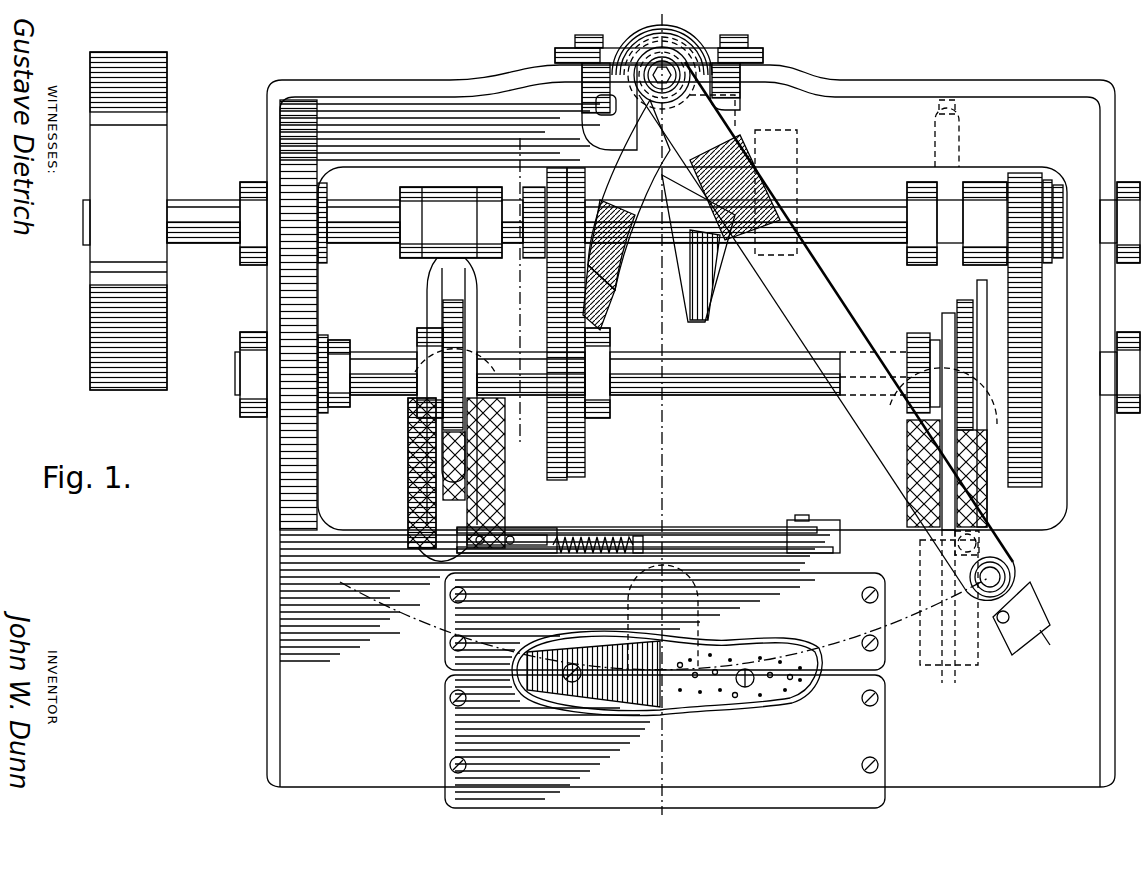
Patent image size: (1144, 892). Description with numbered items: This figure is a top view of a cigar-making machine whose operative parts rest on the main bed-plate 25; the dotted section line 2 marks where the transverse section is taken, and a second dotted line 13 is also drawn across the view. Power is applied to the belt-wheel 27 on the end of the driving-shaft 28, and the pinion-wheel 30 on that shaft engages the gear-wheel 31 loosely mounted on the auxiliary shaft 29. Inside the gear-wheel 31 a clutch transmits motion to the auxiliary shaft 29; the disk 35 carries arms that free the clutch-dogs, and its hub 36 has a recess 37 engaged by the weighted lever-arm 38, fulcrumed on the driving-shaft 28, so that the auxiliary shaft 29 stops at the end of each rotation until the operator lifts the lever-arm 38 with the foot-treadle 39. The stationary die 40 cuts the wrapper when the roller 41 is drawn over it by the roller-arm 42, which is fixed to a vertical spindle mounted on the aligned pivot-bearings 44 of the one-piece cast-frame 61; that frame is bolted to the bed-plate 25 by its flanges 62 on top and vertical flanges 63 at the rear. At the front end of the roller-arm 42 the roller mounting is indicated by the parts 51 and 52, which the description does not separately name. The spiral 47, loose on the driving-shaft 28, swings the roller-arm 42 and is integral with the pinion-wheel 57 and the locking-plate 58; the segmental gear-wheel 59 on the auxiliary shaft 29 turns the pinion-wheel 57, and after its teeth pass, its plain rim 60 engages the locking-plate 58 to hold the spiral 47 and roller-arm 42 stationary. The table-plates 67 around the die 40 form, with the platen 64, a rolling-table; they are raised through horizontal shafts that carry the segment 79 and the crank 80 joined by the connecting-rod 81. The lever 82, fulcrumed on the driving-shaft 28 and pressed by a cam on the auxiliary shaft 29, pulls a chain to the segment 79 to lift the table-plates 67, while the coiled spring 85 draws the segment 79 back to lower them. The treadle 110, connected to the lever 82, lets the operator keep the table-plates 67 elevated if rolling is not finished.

The section line 2 2 is at (662, 416).
The section line 13- 13 is at (520, 289).
The main bed-plate 25 is at (691, 426).
The belt-wheel 27 is at (125, 221).
The driving-shaft 28 is at (830, 200).
The auxiliary shaft 29 is at (731, 396).
The pinion-wheel 30 is at (1022, 174).
The gear-wheel 31 is at (1042, 330).
The disk 35 is at (975, 331).
The hub 36 is at (915, 352).
The recess 37 is at (905, 370).
The weighted lever-arm 38 is at (945, 332).
The foot-treadle 39 is at (990, 507).
The die 40 is at (770, 697).
The roller 41 is at (1000, 546).
The roller-arm 42 is at (827, 331).
The pivot-bearings 44 is at (696, 44).
The rotatory spiral 47 is at (703, 310).
The pivot pin 51 is at (1010, 577).
The clamp block 52 is at (1040, 598).
The pinion-wheel 57 is at (578, 213).
The locking-plate 58 is at (540, 190).
The segmental gear-wheel 59 is at (587, 441).
The plain rim 60 is at (546, 463).
The cast-frame 61 is at (676, 40).
The flanges 62 is at (632, 142).
The vertical flanges 63 is at (765, 50).
The platen 64 is at (717, 703).
The table-plates 67 is at (665, 686).
The segment 79 is at (522, 530).
The crank 80 is at (822, 524).
The connecting-rod 81 is at (645, 529).
The lever 82 is at (428, 283).
The coiled spring 85 is at (598, 535).
The treadle 110 is at (408, 440).